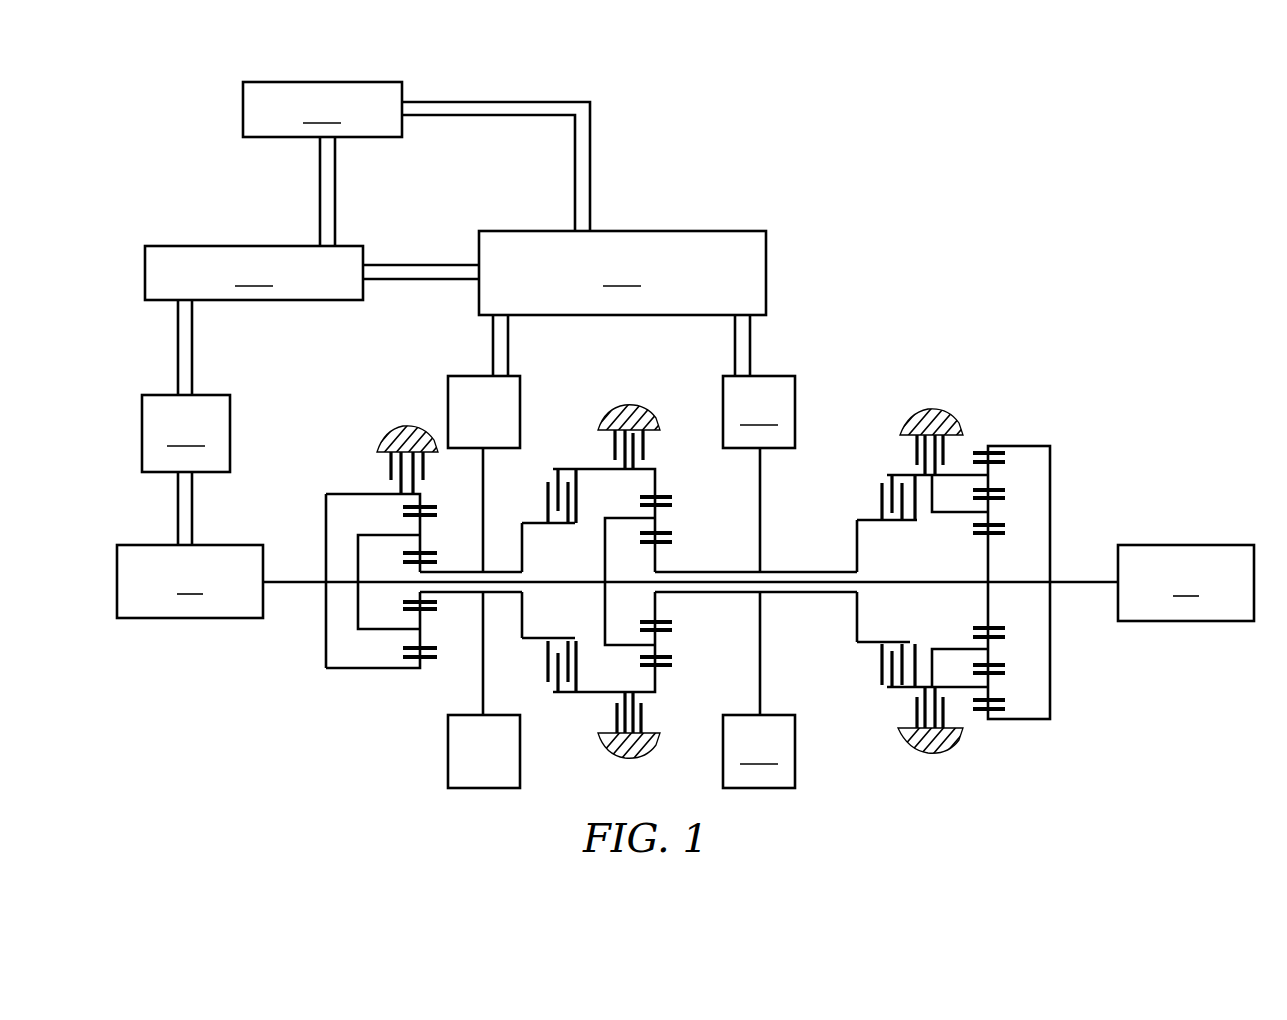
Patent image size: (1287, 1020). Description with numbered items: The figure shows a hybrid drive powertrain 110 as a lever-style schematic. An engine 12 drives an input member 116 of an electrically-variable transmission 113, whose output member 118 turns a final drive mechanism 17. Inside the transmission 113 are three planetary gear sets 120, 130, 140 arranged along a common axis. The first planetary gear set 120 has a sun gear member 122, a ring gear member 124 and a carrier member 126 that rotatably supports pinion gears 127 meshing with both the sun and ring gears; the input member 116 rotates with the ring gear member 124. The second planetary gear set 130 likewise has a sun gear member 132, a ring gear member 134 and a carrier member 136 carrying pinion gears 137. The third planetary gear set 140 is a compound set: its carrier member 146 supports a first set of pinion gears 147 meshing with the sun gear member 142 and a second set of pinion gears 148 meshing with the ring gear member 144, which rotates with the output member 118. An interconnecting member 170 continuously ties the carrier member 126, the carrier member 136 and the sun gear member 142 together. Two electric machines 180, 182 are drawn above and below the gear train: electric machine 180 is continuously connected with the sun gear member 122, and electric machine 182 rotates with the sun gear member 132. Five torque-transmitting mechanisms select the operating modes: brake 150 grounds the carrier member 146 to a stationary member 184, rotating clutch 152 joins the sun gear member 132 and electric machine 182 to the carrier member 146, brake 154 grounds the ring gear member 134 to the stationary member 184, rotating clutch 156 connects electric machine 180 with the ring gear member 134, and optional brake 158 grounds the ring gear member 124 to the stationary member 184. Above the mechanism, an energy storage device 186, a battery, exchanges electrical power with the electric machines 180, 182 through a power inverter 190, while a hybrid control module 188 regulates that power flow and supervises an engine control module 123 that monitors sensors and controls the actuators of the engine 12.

The engine 12 is at (190, 581).
The final drive mechanism 17 is at (1186, 583).
The powertrain 110 is at (945, 196).
The electrically-variable transmission 113 is at (983, 246).
The input member 116 is at (291, 580).
The output member 118 is at (1093, 582).
The planetary gear set 120 is at (398, 673).
The sun gear member 122 is at (428, 507).
The engine control module 123 is at (186, 433).
The ring gear member 124 is at (418, 506).
The carrier member 126 is at (372, 630).
The pinion gears 127 is at (407, 637).
The planetary gear set 130 is at (683, 622).
The sun gear member 132 is at (658, 540).
The ring gear member 134 is at (662, 497).
The carrier member 136 is at (618, 520).
The pinion gears 137 is at (658, 527).
The planetary gear set 140 is at (977, 721).
The sun gear member 142 is at (993, 630).
The ring gear member 144 is at (983, 450).
The carrier member 146 is at (925, 478).
The first set of pinion gears 147 is at (992, 515).
The second set of pinion gears 148 is at (992, 472).
The torque-transmitting mechanism 150 is at (912, 452).
The torque-transmitting mechanism 152 is at (872, 503).
The torque-transmitting mechanism 154 is at (655, 446).
The torque-transmitting mechanism 156 is at (540, 503).
The torque-transmitting mechanism 158 is at (385, 470).
The interconnecting member 170 is at (537, 585).
The electric machine 180 is at (484, 582).
The electric machine 182 is at (759, 582).
The stationary member 184 is at (635, 405).
The energy storage device 186 is at (322, 109).
The hybrid control module 188 is at (254, 273).
The power inverter 190 is at (622, 273).